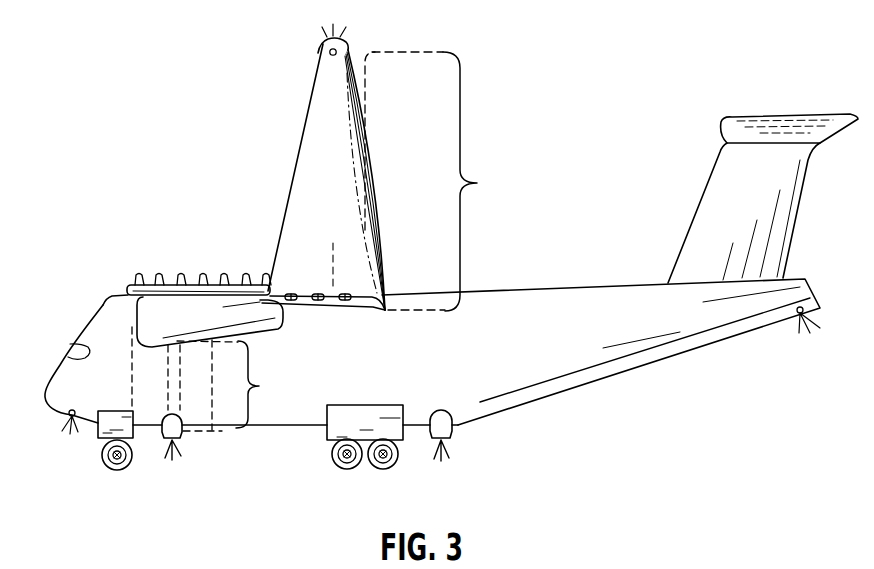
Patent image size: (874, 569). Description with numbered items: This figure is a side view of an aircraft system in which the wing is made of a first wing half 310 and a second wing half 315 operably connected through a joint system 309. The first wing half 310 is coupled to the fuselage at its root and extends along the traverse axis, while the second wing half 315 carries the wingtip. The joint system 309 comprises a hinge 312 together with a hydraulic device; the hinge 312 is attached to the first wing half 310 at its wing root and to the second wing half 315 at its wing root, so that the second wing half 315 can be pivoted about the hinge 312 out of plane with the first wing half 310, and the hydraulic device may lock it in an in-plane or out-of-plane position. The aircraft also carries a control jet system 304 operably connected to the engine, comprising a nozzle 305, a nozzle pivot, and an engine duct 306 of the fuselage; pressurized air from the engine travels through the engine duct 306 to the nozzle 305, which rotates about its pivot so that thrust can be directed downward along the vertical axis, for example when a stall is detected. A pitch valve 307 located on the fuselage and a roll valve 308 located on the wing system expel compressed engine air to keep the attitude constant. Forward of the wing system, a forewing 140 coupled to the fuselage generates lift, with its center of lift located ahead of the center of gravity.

The forewing 140 is at (158, 275).
The control jet system 304 is at (223, 378).
The nozzle 305 is at (160, 438).
The engine duct 306 is at (180, 393).
The pitch valve 307 is at (72, 413).
The roll valve 308 is at (329, 55).
The joint system 309 is at (444, 181).
The first wing half 310 is at (303, 303).
The hinge 312 is at (294, 294).
The second wing half 315 is at (348, 215).